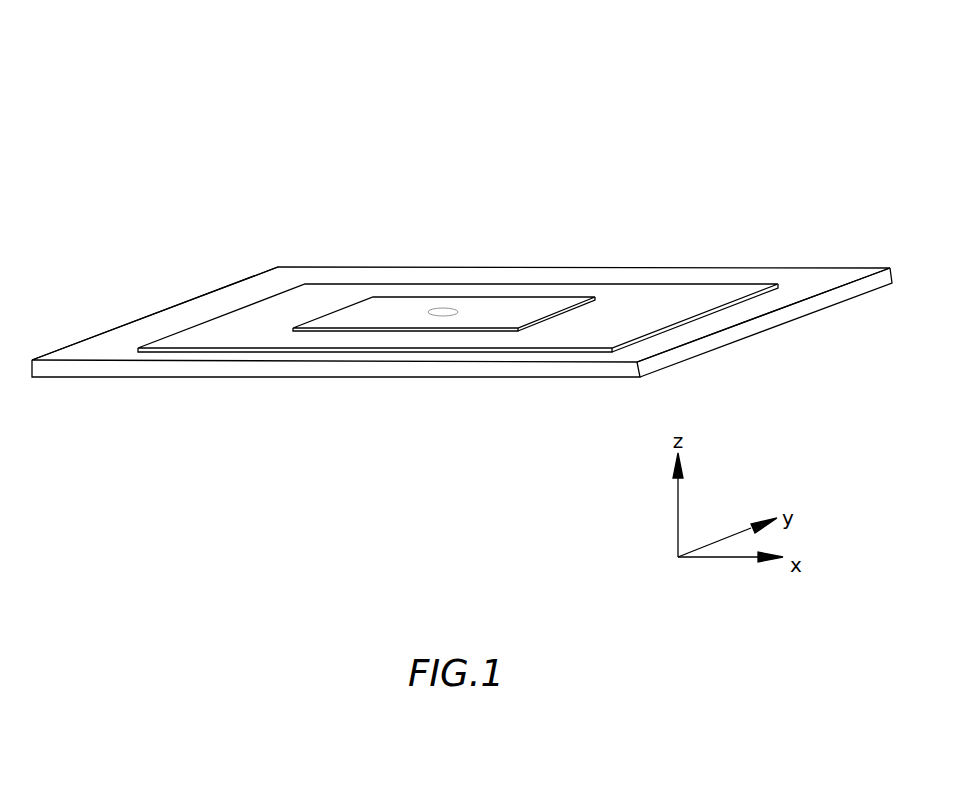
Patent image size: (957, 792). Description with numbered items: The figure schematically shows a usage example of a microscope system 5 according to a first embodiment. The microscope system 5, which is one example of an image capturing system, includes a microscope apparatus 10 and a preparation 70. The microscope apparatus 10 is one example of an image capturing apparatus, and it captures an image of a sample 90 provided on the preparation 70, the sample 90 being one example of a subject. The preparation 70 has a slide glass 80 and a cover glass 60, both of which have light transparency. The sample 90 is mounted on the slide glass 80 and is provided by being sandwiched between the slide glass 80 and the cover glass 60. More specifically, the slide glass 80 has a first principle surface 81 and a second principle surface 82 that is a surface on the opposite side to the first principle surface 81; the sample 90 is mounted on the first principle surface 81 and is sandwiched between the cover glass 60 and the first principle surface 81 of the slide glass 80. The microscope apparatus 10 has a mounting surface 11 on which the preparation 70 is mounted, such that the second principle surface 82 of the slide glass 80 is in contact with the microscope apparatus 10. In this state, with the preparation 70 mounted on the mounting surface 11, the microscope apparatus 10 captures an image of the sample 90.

The microscope system 5 is at (464, 38).
The microscope apparatus 10 is at (462, 344).
The mounting surface 11 is at (198, 312).
The cover glass 60 is at (530, 297).
The preparation 70 is at (648, 197).
The slide glass 80 is at (458, 276).
The first principle surface 81 is at (712, 302).
The second principle surface 82 is at (713, 317).
The sample 90 is at (440, 308).